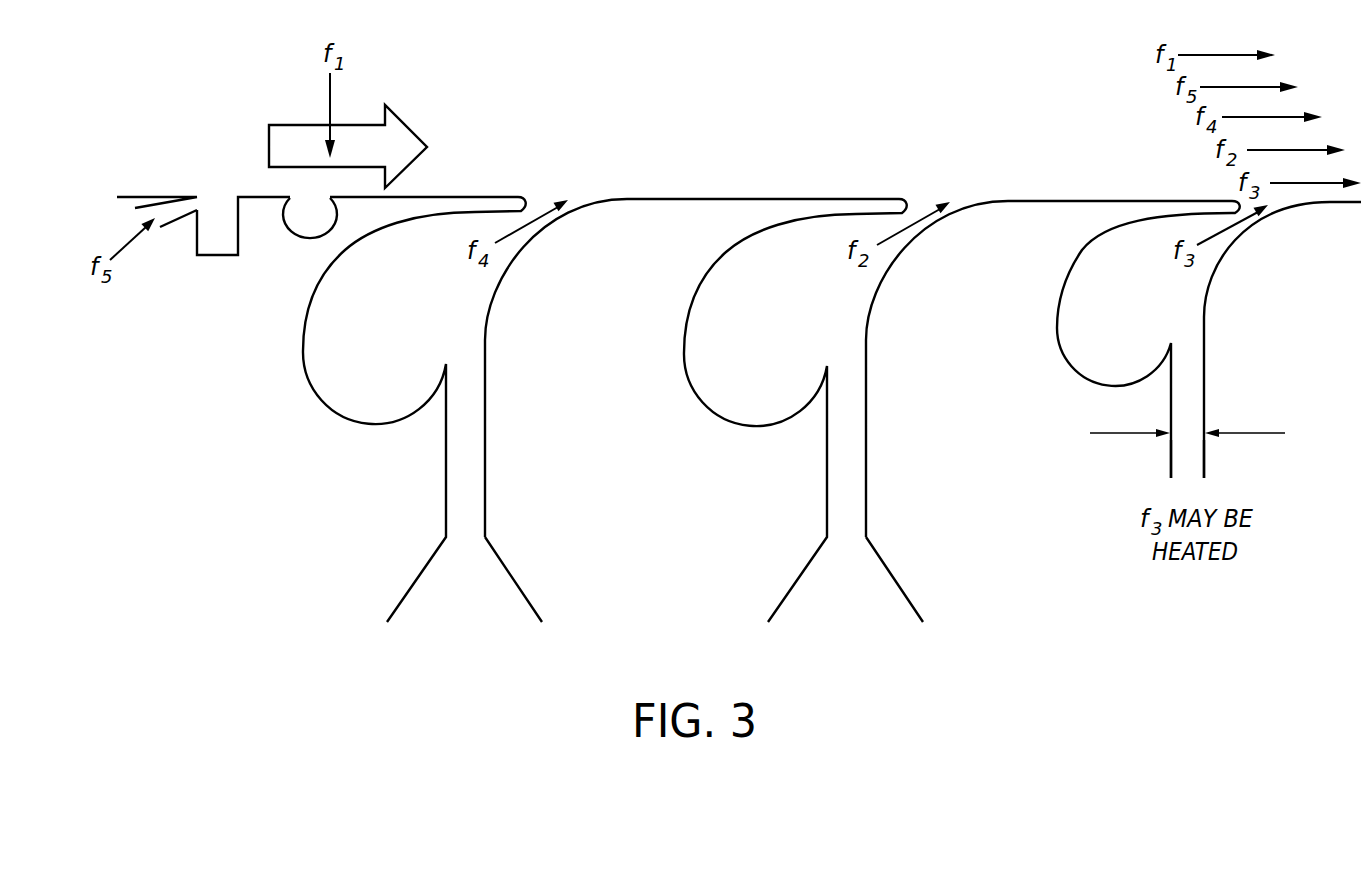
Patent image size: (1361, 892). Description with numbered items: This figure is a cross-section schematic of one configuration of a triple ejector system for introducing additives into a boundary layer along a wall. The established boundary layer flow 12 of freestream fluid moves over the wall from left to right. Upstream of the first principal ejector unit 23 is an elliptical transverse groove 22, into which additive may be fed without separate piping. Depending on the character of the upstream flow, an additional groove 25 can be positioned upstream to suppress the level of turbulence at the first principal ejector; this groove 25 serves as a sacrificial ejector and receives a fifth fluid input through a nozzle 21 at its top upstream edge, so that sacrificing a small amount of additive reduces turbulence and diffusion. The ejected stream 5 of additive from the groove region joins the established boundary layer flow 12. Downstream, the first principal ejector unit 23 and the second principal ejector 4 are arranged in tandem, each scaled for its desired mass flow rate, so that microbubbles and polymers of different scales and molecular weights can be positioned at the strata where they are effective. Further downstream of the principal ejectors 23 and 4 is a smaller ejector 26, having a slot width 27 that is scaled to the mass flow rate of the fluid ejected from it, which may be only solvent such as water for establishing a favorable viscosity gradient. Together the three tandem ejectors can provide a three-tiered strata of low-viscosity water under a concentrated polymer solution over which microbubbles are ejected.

The ejected stream 5 is at (143, 216).
The established boundary layer flow 12 is at (348, 146).
The nozzle 21 is at (167, 227).
The elliptical transverse groove 22 is at (303, 227).
The first principal ejector unit 23 is at (320, 402).
The groove 25 is at (217, 256).
The second principal ejector 4 is at (703, 402).
The smaller ejector 26 is at (1066, 365).
The slot width 27 is at (1182, 434).